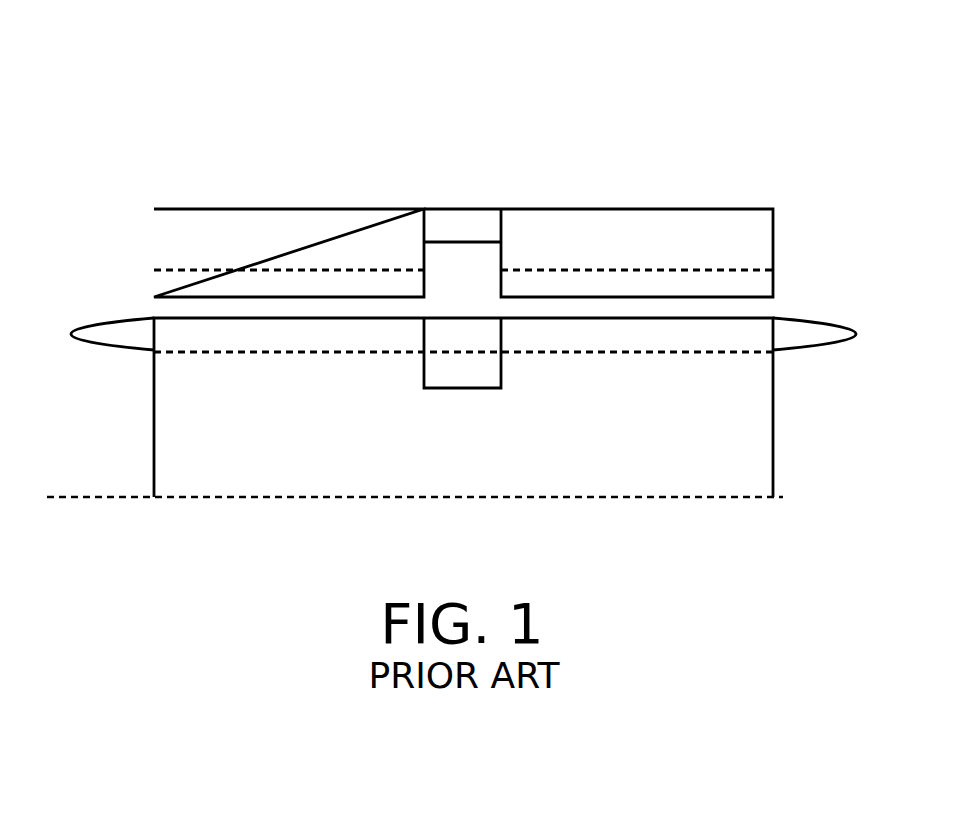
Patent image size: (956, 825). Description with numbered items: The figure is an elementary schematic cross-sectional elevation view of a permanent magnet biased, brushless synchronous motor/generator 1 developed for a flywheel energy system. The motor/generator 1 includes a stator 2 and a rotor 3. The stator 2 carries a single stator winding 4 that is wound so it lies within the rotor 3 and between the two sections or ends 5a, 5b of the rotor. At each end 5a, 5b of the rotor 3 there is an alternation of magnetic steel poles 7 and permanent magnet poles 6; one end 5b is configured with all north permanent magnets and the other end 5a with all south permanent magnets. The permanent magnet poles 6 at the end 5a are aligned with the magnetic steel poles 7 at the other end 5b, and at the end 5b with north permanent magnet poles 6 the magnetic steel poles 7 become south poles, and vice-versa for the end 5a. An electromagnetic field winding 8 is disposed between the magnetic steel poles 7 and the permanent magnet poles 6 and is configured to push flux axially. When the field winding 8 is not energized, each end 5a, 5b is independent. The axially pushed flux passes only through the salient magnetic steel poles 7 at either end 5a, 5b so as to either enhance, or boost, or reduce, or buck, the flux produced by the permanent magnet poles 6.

The motor/generator 1 is at (460, 45).
The stator 2 is at (853, 309).
The rotor 3 is at (798, 143).
The stator winding 4 is at (98, 349).
The rotor end 5a is at (243, 168).
The rotor end 5b is at (722, 168).
The permanent magnet poles 6 is at (162, 286).
The magnetic steel poles 7 is at (773, 281).
The electromagnetic field winding 8 is at (491, 380).